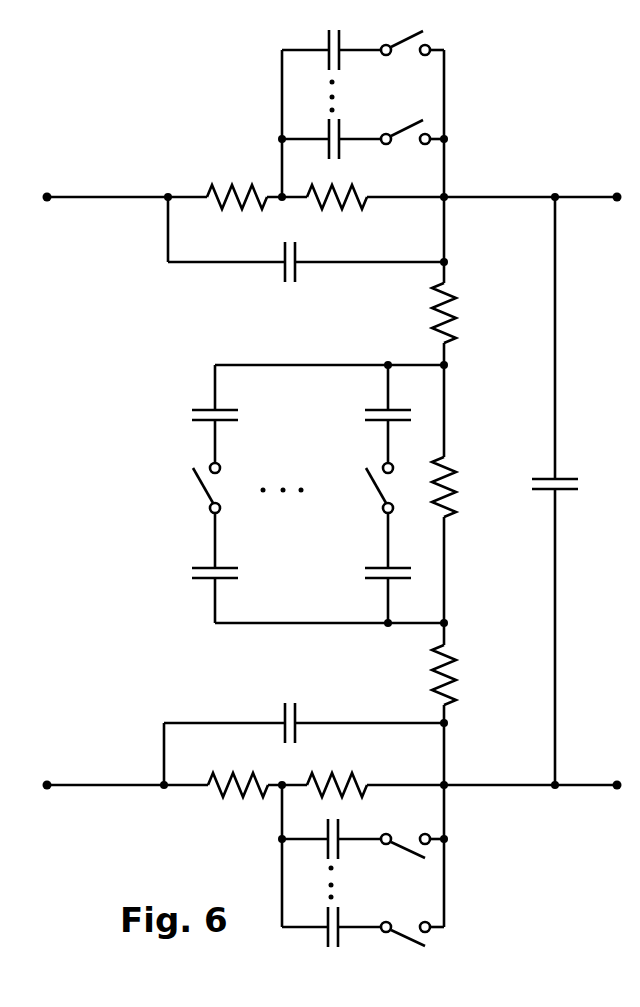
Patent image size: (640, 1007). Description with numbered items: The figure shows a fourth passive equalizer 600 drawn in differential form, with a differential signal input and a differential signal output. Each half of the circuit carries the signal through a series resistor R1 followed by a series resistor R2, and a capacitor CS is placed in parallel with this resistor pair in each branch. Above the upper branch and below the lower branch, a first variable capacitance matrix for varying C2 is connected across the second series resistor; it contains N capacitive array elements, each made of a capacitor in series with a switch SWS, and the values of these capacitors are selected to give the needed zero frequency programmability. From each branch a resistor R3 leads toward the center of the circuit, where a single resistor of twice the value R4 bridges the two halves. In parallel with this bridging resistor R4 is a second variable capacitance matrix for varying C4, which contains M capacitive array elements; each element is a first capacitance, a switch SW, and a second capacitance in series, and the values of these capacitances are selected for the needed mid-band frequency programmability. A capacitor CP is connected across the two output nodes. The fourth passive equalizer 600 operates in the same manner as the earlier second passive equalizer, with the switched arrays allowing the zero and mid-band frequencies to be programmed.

The fourth passive equalizer 600 is at (122, 110).
The resistor R1 is at (237, 491).
The resistor R2 is at (337, 491).
The resistor R3 is at (458, 494).
The resistor 2* R4 is at (453, 487).
The capacitor CS is at (292, 492).
The capacitor CP is at (541, 487).
The first variable capacitance matrix for varying C2 is at (331, 491).
The switch SWn SWS is at (412, 488).
The second variable capacitance matrix for varying C4 is at (281, 494).
The switch SWm SW is at (281, 488).